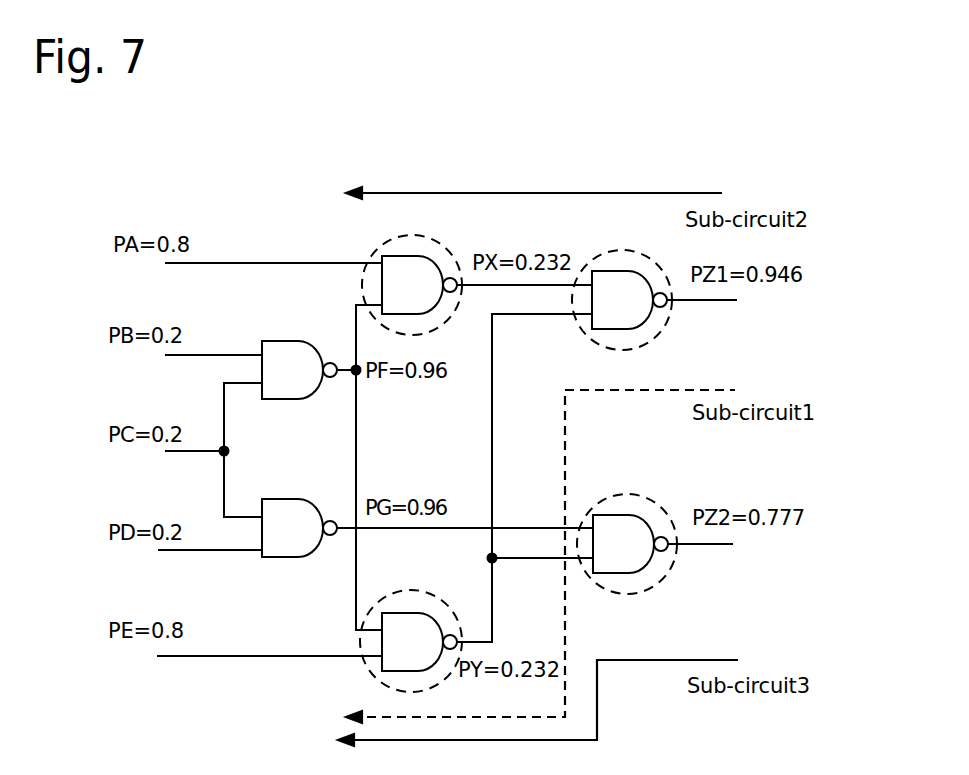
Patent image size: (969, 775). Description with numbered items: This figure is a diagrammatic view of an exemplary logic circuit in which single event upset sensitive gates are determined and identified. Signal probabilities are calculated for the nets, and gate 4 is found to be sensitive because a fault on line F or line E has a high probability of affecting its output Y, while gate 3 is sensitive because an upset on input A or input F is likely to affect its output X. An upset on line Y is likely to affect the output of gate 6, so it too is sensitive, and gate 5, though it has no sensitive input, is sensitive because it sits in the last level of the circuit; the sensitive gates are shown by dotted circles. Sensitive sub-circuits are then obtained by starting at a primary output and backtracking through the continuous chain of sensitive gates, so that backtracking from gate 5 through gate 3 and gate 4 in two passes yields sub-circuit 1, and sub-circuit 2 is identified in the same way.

The sub-circuit 1 is at (294, 357).
The sub-circuit 2 is at (293, 512).
The gate 3 is at (412, 272).
The gate 4 is at (411, 628).
The gate 5 is at (622, 314).
The gate 6 is at (627, 559).